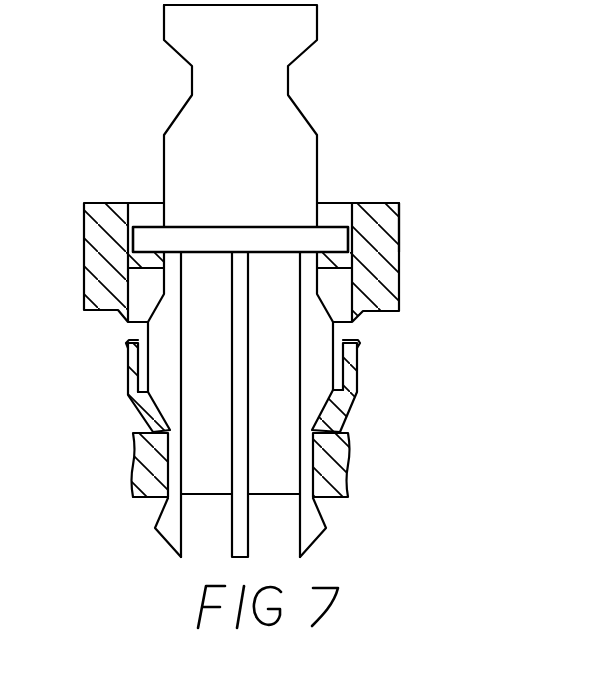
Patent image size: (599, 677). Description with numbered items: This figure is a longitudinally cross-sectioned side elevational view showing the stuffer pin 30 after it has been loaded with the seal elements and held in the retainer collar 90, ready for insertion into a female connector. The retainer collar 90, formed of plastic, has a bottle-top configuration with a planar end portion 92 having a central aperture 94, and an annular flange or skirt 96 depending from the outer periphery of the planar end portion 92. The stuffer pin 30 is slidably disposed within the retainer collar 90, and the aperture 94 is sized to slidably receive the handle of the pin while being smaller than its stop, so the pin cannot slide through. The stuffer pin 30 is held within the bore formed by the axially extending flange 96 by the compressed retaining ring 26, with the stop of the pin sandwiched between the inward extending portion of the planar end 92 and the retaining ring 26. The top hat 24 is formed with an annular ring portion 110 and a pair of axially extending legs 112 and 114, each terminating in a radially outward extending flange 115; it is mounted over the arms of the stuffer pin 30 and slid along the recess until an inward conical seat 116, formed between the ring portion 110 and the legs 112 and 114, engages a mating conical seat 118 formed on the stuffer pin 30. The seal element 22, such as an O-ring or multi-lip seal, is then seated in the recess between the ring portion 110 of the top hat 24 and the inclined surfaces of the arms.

The seal element 22 is at (131, 482).
The top hat 24 is at (227, 398).
The retaining ring 26 is at (225, 246).
The stuffer pin 30 is at (268, 59).
The retainer collar 90 is at (103, 267).
The planar end portion 92 is at (348, 203).
The central aperture 94 is at (156, 226).
The annular flange or skirt 96 is at (396, 261).
The annular ring portion 110 is at (137, 418).
The axially extending leg 112 is at (126, 367).
The axially extending leg 114 is at (359, 383).
The radially outward extending flange 115 is at (125, 341).
The inward conical seat 116 is at (333, 404).
The mating conical seat 118 is at (314, 430).